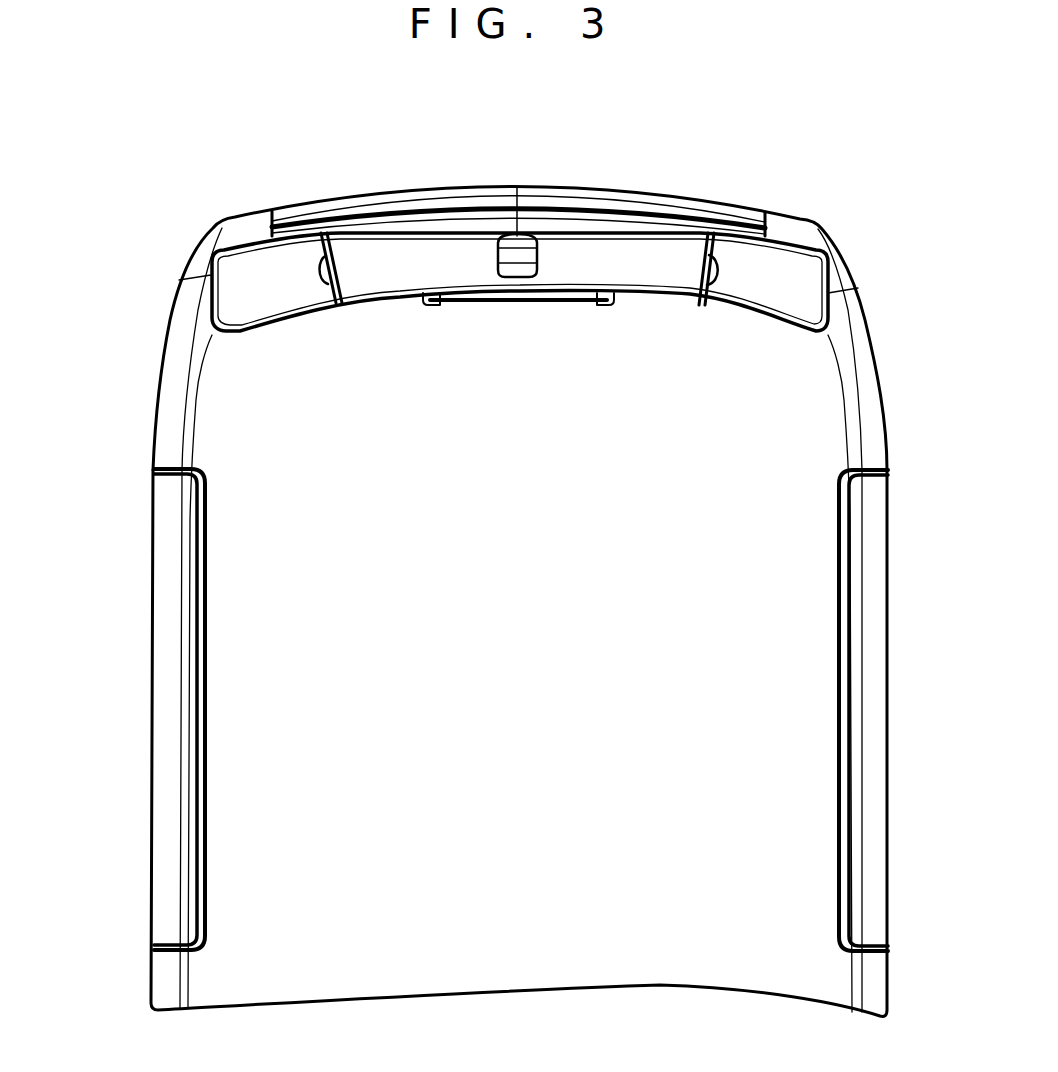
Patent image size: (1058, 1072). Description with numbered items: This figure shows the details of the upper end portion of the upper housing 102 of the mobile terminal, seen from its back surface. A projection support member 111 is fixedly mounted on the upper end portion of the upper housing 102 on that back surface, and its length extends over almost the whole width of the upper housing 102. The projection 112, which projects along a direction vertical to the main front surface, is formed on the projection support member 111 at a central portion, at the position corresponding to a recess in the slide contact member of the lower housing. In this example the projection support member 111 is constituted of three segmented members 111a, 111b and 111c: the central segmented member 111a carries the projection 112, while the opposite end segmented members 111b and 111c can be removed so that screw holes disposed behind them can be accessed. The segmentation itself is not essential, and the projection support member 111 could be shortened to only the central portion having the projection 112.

The upper housing 102 is at (182, 243).
The projection support member 111 is at (658, 304).
The segmented member 111a is at (421, 255).
The segmented member 111b is at (242, 283).
The segmented member 111c is at (777, 281).
The projection 112 is at (539, 259).